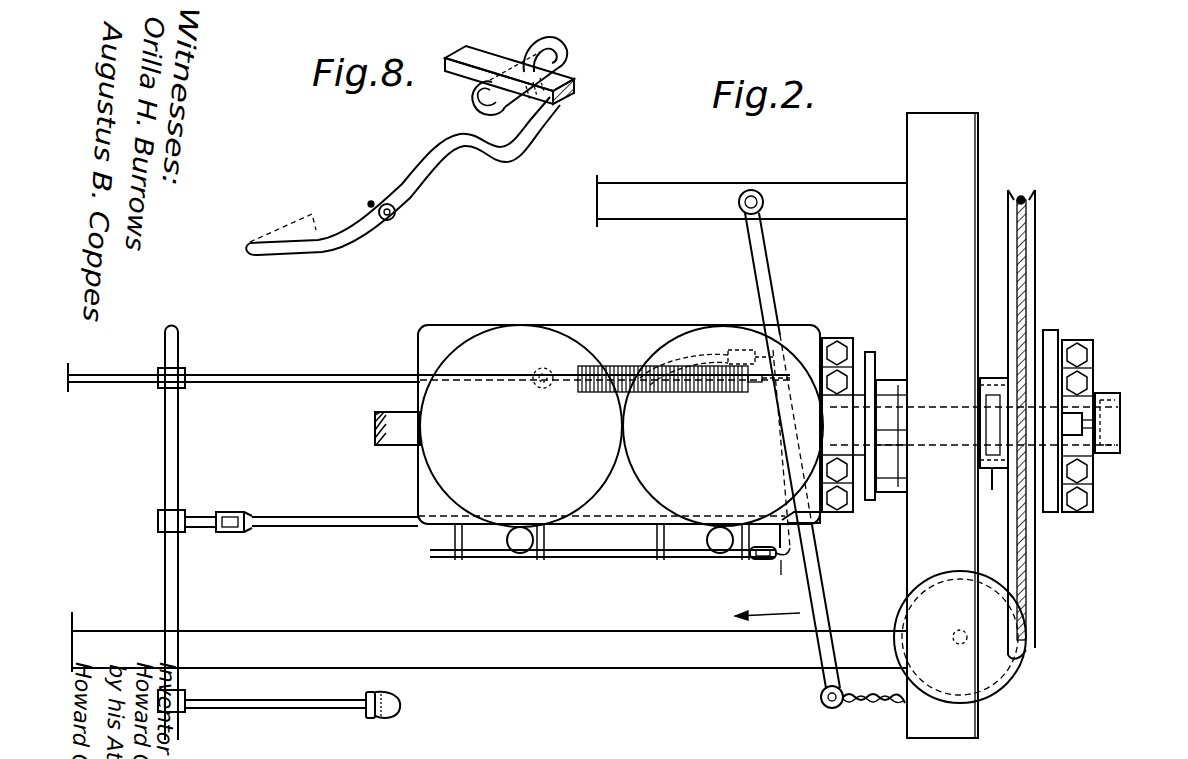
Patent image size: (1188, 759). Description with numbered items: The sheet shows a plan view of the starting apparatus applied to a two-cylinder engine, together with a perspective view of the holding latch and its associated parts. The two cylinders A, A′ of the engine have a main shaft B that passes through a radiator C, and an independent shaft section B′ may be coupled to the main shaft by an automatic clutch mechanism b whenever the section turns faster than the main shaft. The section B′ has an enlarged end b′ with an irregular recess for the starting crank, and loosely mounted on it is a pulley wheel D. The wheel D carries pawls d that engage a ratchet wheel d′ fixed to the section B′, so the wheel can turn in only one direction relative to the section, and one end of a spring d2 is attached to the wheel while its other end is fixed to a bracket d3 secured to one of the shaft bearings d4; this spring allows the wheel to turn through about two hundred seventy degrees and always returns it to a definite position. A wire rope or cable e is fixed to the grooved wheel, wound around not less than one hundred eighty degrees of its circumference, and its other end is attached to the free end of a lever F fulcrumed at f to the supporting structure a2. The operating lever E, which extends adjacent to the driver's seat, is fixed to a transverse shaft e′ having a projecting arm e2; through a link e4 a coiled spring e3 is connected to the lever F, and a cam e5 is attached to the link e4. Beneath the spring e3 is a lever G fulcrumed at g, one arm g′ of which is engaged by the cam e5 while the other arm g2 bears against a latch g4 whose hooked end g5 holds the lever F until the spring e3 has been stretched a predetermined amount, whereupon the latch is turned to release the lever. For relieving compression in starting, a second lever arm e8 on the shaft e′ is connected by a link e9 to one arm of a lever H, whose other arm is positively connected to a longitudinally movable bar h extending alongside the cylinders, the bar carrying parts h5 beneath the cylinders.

In FIG. 8, the lever F is at (497, 60).
In FIG. 2, the lever F is at (814, 592).
In FIG. 8, the latch or catch g4 is at (566, 48).
In FIG. 2, the latch or catch g4 is at (812, 345).
In FIG. 8, the hooked end g5 is at (478, 92).
In FIG. 2, the hooked end g5 is at (740, 350).
In FIG. 8, the arm of lever G g2 is at (535, 110).
In FIG. 8, the lever G is at (403, 176).
In FIG. 8, the cam e5 is at (305, 214).
In FIG. 8, the fulcrum of lever G g is at (390, 214).
In FIG. 8, the arm of lever G g′ is at (264, 254).
In FIG. 2, the radiator C is at (942, 425).
In FIG. 2, the supporting structure a2 is at (489, 423).
In FIG. 2, the fulcrum of lever F f is at (762, 194).
In FIG. 2, the wire rope or cable e is at (1025, 312).
In FIG. 2, the pulley wheel D is at (1027, 283).
In FIG. 2, the pawls d is at (990, 392).
In FIG. 2, the ratchet wheel d′ is at (992, 470).
In FIG. 2, the spring d2 is at (1052, 334).
In FIG. 2, the bracket d3 is at (1088, 398).
In FIG. 2, the shaft section B′ is at (1118, 416).
In FIG. 2, the enlarged end of shaft section b′ is at (1108, 456).
In FIG. 2, the shaft bearing d4 is at (1090, 492).
In FIG. 2, the automatic clutch mechanism b is at (893, 440).
In FIG. 2, the cylinder A is at (619, 426).
In FIG. 2, the cylinder A′ is at (723, 426).
In FIG. 2, the main shaft B is at (402, 446).
In FIG. 2, the link e4 is at (362, 374).
In FIG. 2, the projecting arm e2 is at (128, 380).
In FIG. 2, the transverse shaft e′ is at (176, 487).
In FIG. 2, the second lever arm e8 is at (192, 518).
In FIG. 2, the link e9 is at (334, 527).
In FIG. 2, the operating lever E is at (400, 706).
In FIG. 2, the coiled spring e3 is at (618, 380).
In FIG. 2, the bar or rod h is at (612, 558).
In FIG. 2, the roller h5 is at (525, 534).
In FIG. 2, the lever H is at (785, 558).